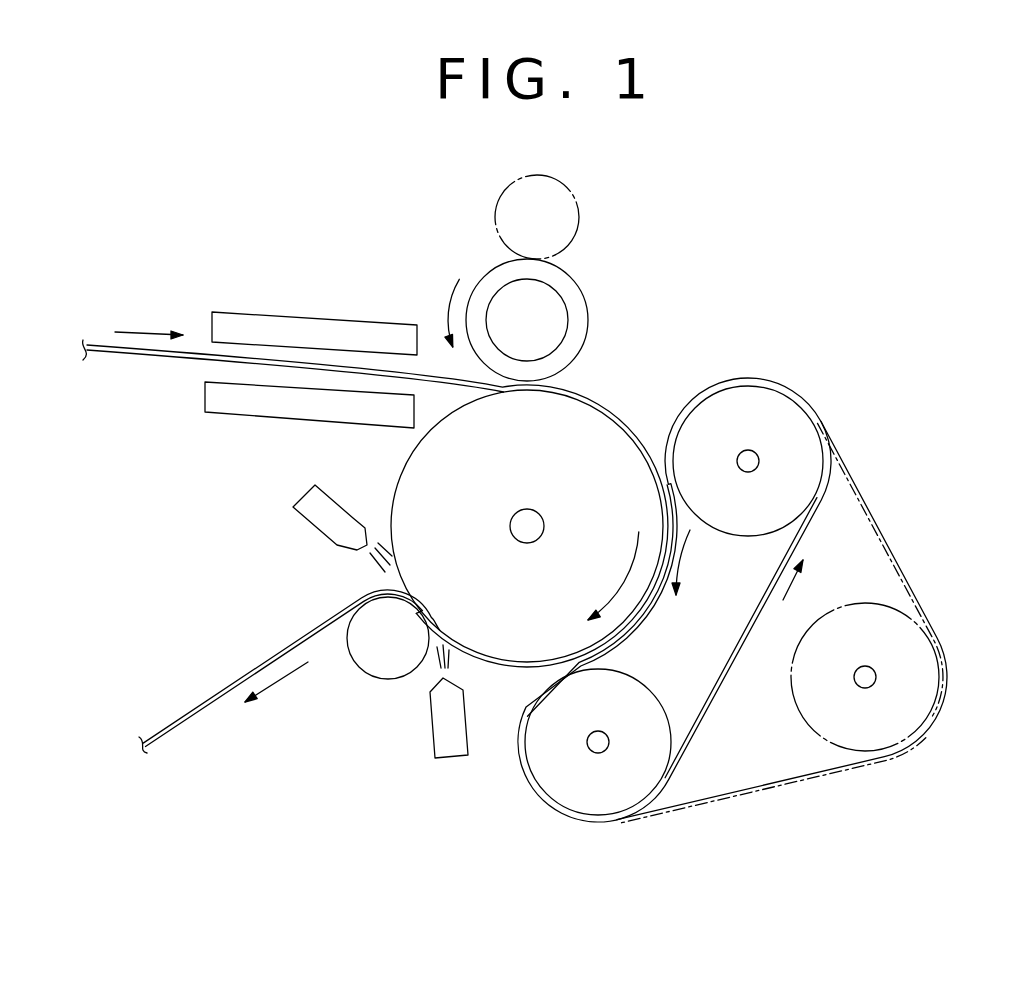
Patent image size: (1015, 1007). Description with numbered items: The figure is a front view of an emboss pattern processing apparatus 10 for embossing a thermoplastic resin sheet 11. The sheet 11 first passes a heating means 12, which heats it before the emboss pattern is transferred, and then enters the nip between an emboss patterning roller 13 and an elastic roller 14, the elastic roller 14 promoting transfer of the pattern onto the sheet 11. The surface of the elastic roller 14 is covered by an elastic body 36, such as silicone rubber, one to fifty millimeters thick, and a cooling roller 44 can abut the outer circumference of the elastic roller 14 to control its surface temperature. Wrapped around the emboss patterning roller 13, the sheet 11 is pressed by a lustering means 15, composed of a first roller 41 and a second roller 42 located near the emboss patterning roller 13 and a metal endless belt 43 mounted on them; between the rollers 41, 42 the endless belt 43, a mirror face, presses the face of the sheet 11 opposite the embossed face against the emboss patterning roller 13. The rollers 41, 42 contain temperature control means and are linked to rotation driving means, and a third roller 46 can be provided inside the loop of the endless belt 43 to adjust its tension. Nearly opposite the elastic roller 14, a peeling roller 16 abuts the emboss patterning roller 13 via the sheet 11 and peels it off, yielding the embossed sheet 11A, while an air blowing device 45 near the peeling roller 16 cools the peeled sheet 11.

The emboss pattern processing apparatus 10 is at (767, 365).
The thermoplastic resin sheet 11 is at (108, 357).
The embossed sheet 11A is at (190, 716).
The heating means 12 is at (258, 325).
The emboss patterning roller 13 is at (593, 438).
The elastic roller 14 is at (545, 312).
The lustering means 15 is at (572, 822).
The peeling roller 16 is at (378, 655).
The elastic body 36 is at (490, 273).
The first roller 41 is at (788, 428).
The second roller 42 is at (633, 702).
The metal endless belt 43 is at (732, 665).
The cooling roller 44 is at (578, 200).
The air blowing device 45 is at (295, 513).
The third roller 46 is at (825, 742).